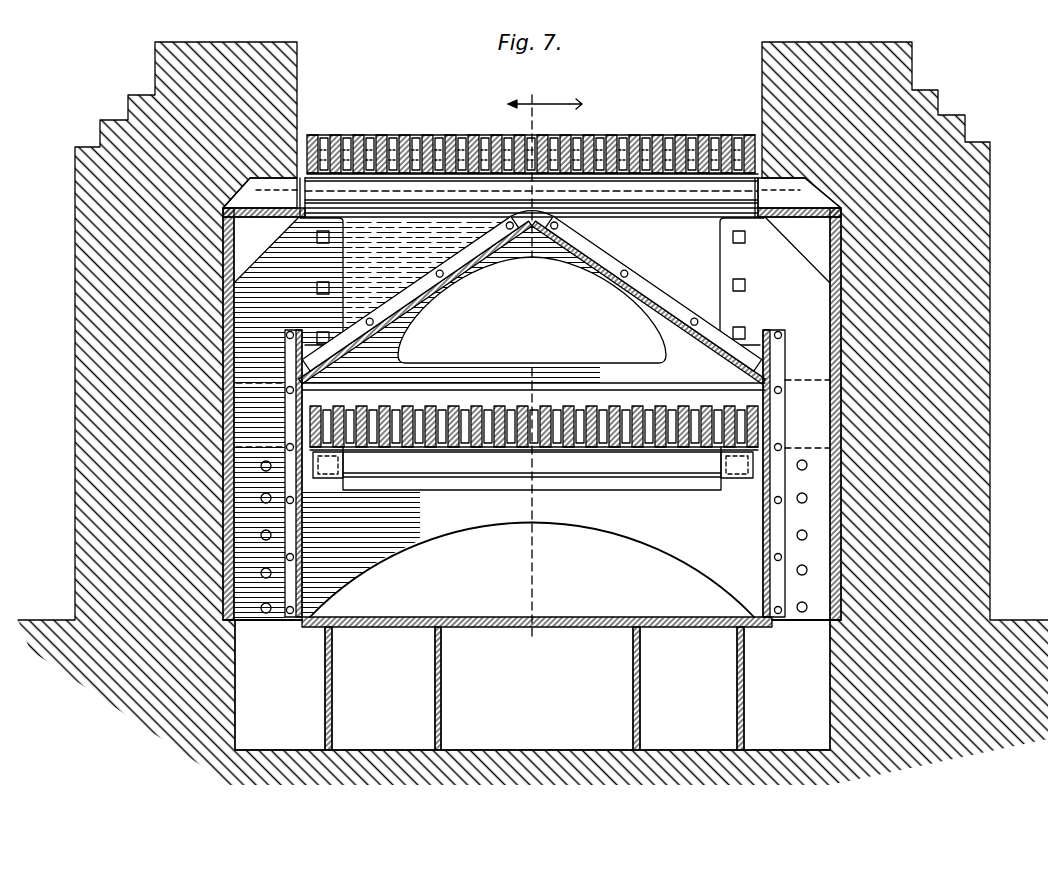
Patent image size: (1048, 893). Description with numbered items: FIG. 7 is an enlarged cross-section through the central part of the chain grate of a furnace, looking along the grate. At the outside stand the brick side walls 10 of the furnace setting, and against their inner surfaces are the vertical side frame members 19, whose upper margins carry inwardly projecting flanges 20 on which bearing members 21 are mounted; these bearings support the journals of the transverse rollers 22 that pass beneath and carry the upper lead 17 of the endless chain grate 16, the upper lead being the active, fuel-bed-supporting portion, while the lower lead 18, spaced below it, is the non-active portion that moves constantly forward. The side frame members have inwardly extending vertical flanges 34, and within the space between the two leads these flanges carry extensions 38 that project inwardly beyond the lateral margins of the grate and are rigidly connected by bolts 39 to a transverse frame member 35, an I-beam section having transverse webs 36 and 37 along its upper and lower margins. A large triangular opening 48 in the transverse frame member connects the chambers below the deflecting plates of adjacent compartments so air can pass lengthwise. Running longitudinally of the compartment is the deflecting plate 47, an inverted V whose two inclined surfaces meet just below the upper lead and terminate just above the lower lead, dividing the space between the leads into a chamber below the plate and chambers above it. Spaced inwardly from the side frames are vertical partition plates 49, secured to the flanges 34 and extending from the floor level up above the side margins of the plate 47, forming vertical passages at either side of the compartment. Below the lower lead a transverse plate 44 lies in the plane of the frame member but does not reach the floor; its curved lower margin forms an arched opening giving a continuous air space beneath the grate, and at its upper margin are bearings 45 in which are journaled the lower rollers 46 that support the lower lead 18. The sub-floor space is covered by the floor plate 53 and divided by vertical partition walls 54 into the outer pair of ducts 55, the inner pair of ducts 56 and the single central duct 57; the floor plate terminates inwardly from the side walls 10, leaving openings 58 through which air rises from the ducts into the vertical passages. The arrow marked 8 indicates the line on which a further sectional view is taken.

The section line indicator 8 is at (545, 356).
The side walls 10 is at (75, 358).
The grate 16 is at (623, 134).
The upper lead 17 is at (664, 153).
The lower lead 18 is at (553, 402).
The side frame members 19 is at (236, 352).
The inwardly projecting flanges 20 is at (262, 215).
The bearing members 21 is at (532, 197).
The rollers 22 is at (422, 185).
The vertical flanges 34 is at (532, 419).
The transverse frame members 35 is at (596, 268).
The upper transverse web 36 is at (663, 206).
The lower transverse web 37 is at (483, 382).
The extensions 38 is at (350, 264).
The bolts 39 is at (330, 237).
The transverse plates 44 is at (567, 523).
The bearings 45 is at (328, 474).
The lower rollers 46 is at (532, 468).
The deflecting plate 47 is at (472, 266).
The triangular openings 48 is at (565, 272).
The vertical partition plates 49 is at (275, 570).
The floor plate 53 is at (507, 618).
The vertical partition walls 54 is at (435, 684).
The outer ducts 55 is at (532, 685).
The inner ducts 56 is at (534, 688).
The central duct 57 is at (537, 688).
The openings 58 is at (261, 621).